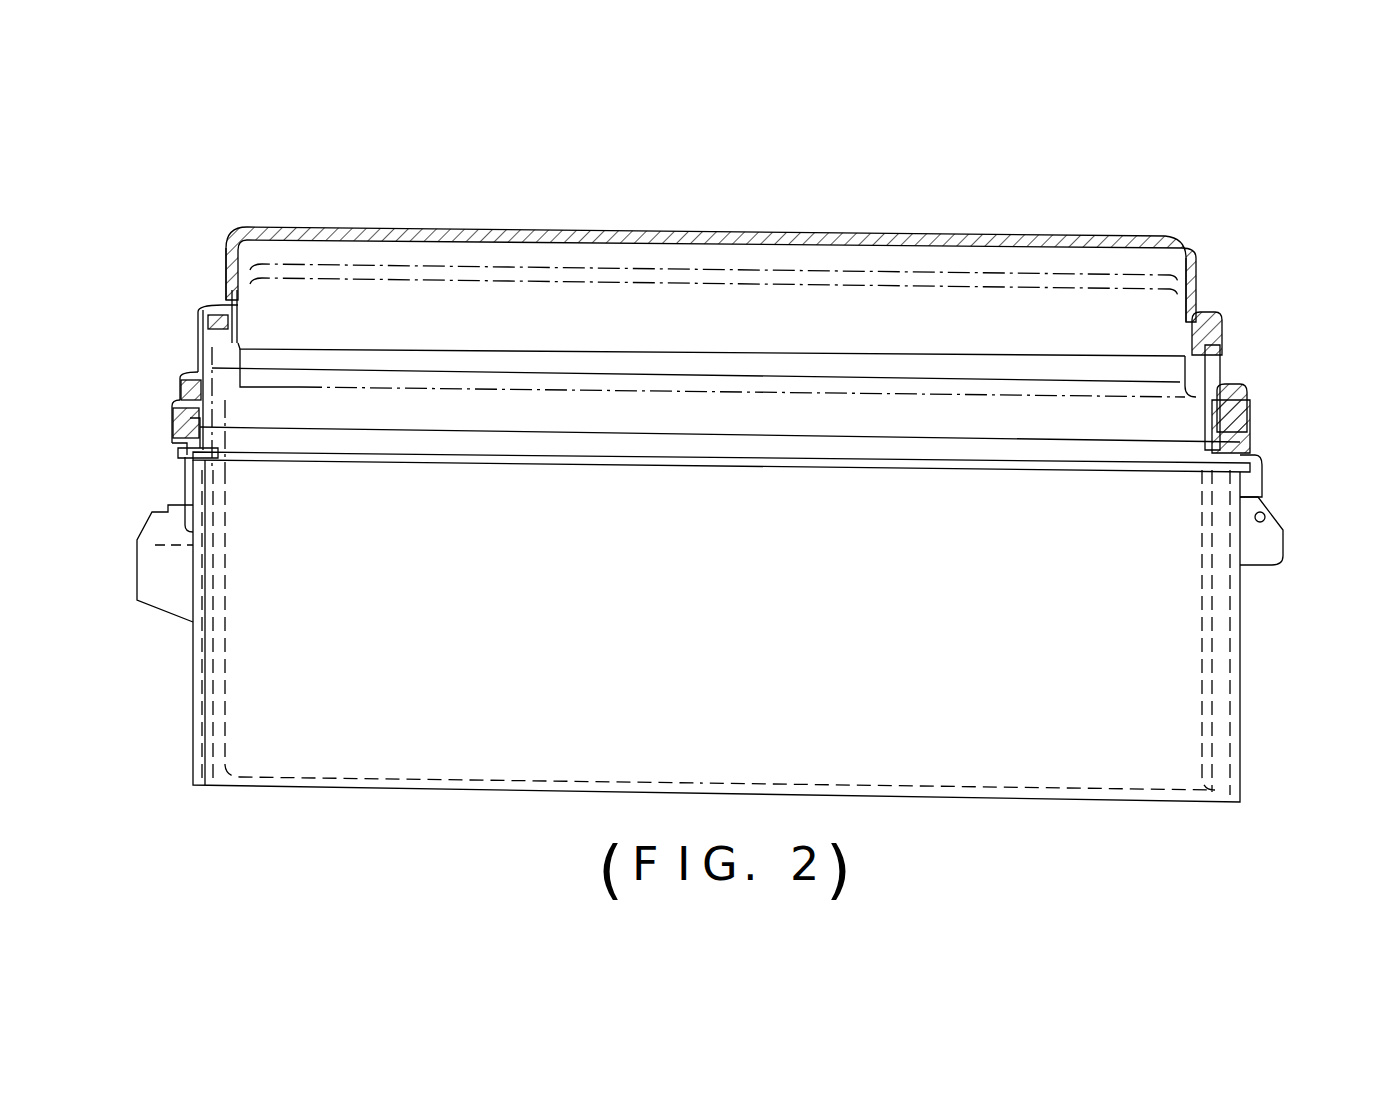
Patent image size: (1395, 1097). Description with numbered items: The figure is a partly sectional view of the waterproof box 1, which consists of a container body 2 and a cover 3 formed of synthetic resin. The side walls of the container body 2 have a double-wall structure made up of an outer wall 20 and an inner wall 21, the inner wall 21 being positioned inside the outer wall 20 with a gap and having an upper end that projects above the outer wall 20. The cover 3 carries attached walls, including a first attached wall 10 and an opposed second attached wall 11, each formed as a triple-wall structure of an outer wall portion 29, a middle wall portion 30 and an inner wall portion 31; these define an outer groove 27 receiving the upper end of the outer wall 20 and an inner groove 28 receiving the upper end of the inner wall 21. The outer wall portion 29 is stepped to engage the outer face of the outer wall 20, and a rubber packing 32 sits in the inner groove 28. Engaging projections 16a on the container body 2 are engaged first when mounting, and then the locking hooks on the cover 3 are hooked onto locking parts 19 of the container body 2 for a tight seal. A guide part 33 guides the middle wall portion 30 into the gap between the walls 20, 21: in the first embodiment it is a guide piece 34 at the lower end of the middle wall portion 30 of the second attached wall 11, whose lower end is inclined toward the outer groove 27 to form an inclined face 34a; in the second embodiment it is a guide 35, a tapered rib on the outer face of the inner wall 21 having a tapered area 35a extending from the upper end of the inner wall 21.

The waterproof box 1 is at (906, 208).
The container body 2 is at (190, 717).
The cover 3 is at (676, 226).
The first attached wall 10 is at (1196, 278).
The second attached wall 11 is at (225, 268).
The engaging projection 16a is at (140, 522).
The locking part 19 is at (1272, 544).
The outer wall 20 is at (192, 647).
The inner wall 21 is at (1236, 650).
The outer groove 27 is at (1245, 400).
The inner groove 28 is at (195, 350).
The outer wall portion 29 is at (172, 422).
The middle wall portion 30 is at (182, 388).
The inner wall portion 31 is at (255, 340).
The packing 32 is at (200, 322).
The guide part 33 is at (172, 436).
The guide piece 34 is at (225, 422).
The inclined face 34a is at (200, 448).
The guide 35 is at (1248, 432).
The tapered area 35a is at (1252, 425).